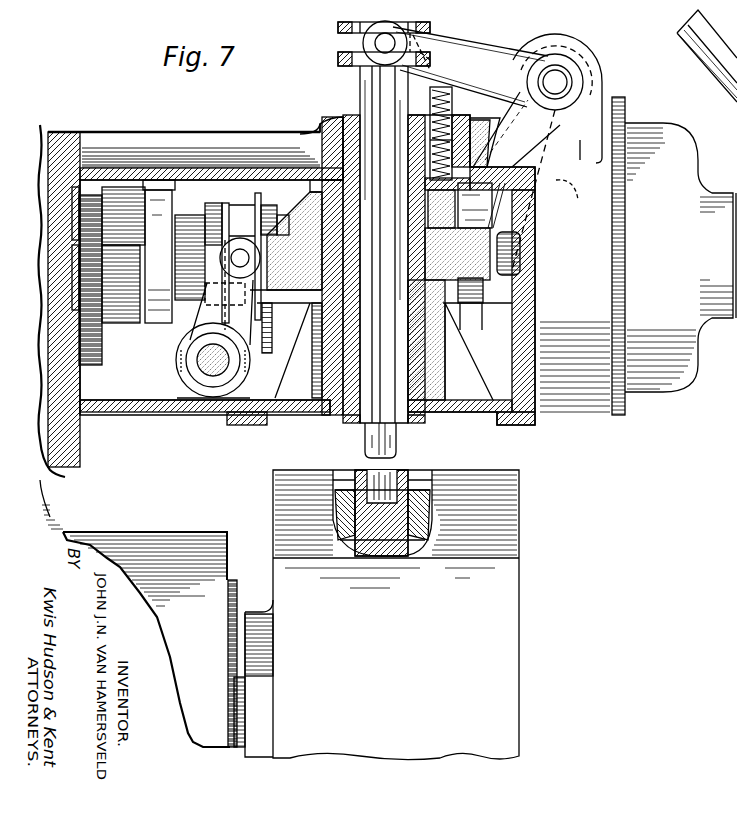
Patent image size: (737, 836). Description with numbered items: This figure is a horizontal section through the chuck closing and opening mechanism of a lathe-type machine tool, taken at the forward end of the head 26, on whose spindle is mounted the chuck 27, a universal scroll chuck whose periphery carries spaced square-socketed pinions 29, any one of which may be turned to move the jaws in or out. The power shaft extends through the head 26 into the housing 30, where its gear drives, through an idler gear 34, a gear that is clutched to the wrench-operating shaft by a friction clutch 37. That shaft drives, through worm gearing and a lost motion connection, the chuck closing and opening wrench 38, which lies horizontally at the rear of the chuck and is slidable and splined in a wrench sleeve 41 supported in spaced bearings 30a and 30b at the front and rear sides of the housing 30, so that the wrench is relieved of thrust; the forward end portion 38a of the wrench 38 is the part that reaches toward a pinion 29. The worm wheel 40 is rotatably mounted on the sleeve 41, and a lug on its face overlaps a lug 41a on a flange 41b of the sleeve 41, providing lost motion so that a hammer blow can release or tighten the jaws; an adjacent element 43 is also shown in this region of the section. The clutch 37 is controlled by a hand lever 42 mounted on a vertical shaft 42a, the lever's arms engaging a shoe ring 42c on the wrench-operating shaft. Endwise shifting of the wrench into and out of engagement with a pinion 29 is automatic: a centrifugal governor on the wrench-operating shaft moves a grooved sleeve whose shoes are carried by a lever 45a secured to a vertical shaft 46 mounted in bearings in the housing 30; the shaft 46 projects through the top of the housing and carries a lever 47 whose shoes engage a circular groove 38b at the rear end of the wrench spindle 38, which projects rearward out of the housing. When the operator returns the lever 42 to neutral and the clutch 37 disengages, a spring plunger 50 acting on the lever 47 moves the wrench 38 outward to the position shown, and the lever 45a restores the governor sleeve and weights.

The head 26 is at (43, 490).
The chuck 27 is at (510, 700).
The square-socketed pinion 29 is at (345, 512).
The housing 30 is at (150, 165).
The bearing 30a is at (330, 350).
The bearing 30b is at (320, 125).
The idler gear 34 is at (100, 343).
The friction clutch 37 is at (137, 322).
The chuck closing and opening wrench 38 is at (352, 425).
The shaft end 38a is at (396, 440).
The circular groove 38b is at (338, 40).
The worm wheel 40 is at (292, 240).
The wrench sleeve 41 is at (315, 370).
The lug 41a is at (287, 322).
The flange 41b is at (487, 300).
The lever 42 is at (167, 330).
The vertical shaft 42a is at (195, 366).
The shoe ring 42c is at (232, 205).
The wedge 43 is at (310, 308).
The lever 45a is at (572, 198).
The vertical shaft 46 is at (560, 80).
The lever 47 is at (483, 52).
The spring plunger 50 is at (452, 100).